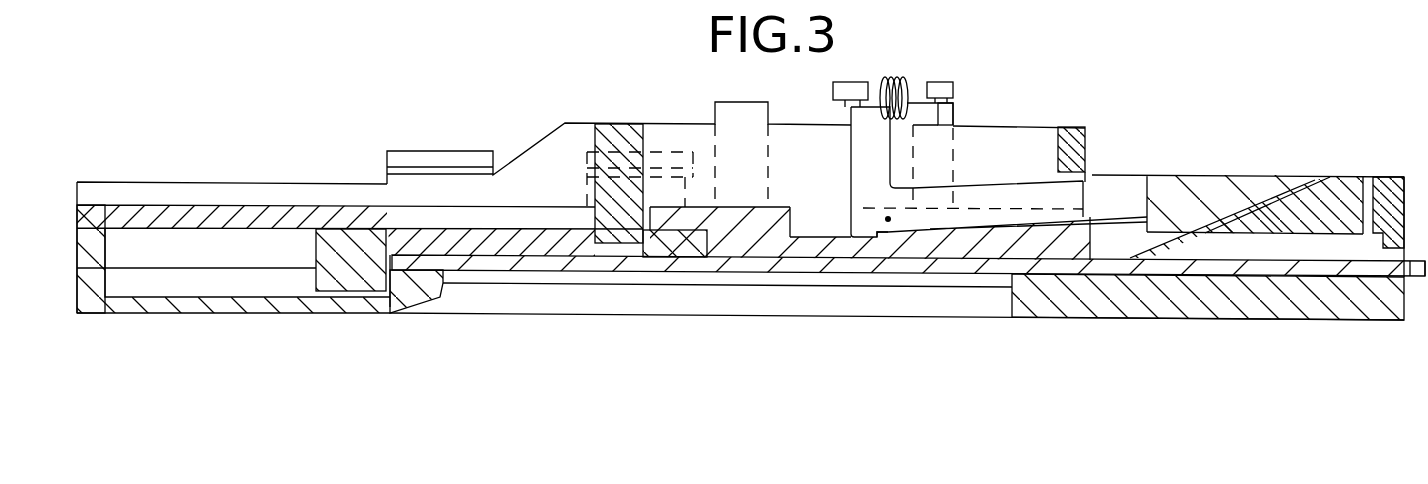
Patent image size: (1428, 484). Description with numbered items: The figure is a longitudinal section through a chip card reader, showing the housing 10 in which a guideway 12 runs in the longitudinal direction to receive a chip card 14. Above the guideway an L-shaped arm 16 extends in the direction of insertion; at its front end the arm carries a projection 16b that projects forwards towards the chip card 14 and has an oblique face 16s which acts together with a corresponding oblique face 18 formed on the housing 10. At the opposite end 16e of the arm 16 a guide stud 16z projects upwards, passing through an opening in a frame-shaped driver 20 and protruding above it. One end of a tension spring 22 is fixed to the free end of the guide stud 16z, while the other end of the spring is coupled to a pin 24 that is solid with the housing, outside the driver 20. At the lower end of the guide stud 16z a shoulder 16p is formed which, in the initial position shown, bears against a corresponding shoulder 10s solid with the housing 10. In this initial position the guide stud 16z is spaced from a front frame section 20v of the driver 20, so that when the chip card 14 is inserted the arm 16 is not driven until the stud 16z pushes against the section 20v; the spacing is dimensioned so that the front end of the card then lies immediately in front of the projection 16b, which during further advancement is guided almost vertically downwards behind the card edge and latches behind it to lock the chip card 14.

The housing 10 is at (1090, 300).
The shoulder 10s is at (887, 240).
The guideway 12 is at (650, 278).
The chip card 14 is at (747, 272).
The L-shaped arm 16 is at (1127, 180).
The projection 16b is at (1383, 255).
The end of the arm 16e is at (888, 220).
The shoulder 16p is at (863, 236).
The oblique face 16s is at (1380, 240).
The guide stud 16z is at (857, 123).
The oblique face 18 is at (1327, 177).
The driver 20 is at (790, 140).
The front frame section 20v is at (1073, 126).
The tension spring 22 is at (907, 77).
The pin 24 is at (952, 84).